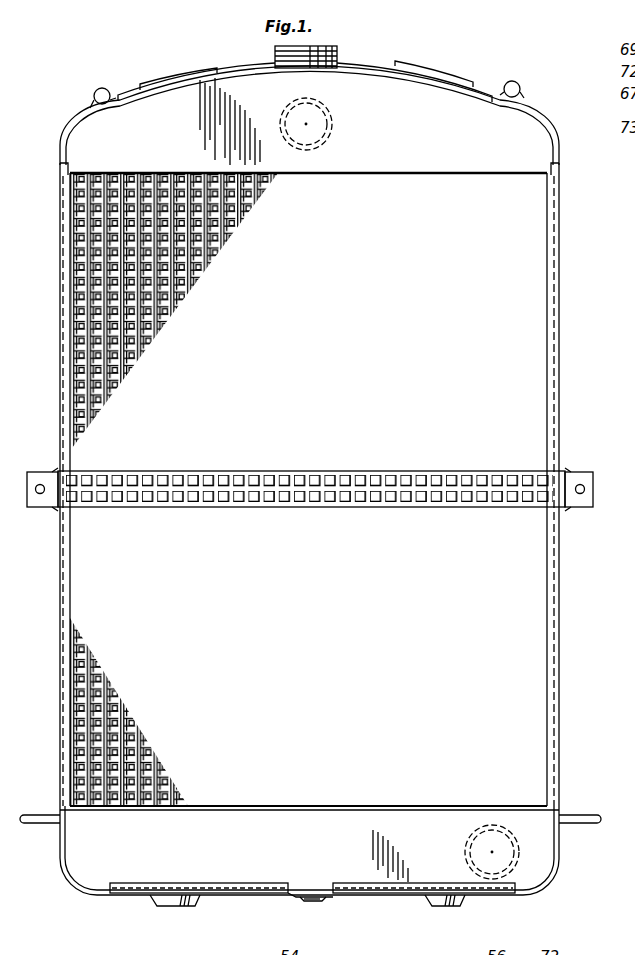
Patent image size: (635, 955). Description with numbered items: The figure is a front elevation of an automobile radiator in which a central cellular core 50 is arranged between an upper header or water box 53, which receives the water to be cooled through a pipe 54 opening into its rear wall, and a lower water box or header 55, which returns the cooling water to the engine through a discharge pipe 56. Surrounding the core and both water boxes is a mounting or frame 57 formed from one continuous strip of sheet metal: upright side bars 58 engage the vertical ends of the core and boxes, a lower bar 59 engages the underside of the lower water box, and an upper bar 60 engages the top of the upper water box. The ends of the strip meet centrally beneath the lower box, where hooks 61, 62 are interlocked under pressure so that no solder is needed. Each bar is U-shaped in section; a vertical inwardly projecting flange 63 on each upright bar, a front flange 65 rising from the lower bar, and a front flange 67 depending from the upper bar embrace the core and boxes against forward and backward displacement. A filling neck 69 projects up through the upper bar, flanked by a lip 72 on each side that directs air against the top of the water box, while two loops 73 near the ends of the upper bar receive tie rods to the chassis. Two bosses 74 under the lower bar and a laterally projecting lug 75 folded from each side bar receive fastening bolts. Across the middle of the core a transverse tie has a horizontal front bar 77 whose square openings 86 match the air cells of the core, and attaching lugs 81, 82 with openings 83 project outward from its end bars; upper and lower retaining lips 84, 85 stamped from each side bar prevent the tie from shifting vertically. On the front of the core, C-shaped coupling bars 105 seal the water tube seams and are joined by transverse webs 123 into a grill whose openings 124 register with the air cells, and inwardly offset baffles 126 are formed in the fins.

The central cellular core 50 is at (174, 489).
The upper header or water box 53 is at (309, 115).
The pipe 54 is at (322, 140).
The lower water box or header 55 is at (309, 850).
The discharge pipe 56 is at (468, 843).
The mounting or frame 57 is at (314, 488).
The upright sheet metal straps or bars 58 is at (60, 316).
The lower strap or bar 59 is at (300, 896).
The upper sheet metal strap or bar 60 is at (122, 96).
The hook 61 is at (308, 893).
The hook 62 is at (308, 902).
The vertical inwardly projecting flange 63 is at (70, 572).
The front flange 65 is at (234, 872).
The front flange 67 is at (262, 78).
The filling neck 69 is at (338, 53).
The baffle, flange or lip 72 is at (205, 72).
The upwardly projecting loop 73 is at (96, 90).
The boss 74 is at (160, 908).
The laterally projecting lug 75 is at (40, 815).
The horizontal front bar 77 is at (290, 472).
The attaching lug 81 is at (30, 508).
The attaching lug 82 is at (590, 478).
The opening 83 is at (36, 490).
The upper retaining lip 84 is at (57, 471).
The lower retaining lip 85 is at (58, 508).
The opening 86 is at (132, 478).
The coupling bar 105 is at (155, 333).
The transverse web or cross bar 123 is at (98, 405).
The opening 124 is at (130, 355).
The inwardly offset baffle or deflecting member 126 is at (150, 345).